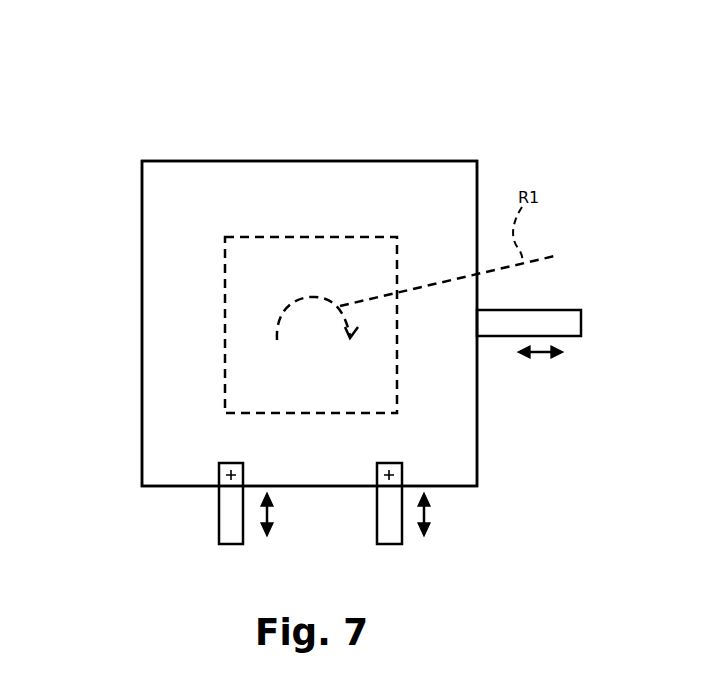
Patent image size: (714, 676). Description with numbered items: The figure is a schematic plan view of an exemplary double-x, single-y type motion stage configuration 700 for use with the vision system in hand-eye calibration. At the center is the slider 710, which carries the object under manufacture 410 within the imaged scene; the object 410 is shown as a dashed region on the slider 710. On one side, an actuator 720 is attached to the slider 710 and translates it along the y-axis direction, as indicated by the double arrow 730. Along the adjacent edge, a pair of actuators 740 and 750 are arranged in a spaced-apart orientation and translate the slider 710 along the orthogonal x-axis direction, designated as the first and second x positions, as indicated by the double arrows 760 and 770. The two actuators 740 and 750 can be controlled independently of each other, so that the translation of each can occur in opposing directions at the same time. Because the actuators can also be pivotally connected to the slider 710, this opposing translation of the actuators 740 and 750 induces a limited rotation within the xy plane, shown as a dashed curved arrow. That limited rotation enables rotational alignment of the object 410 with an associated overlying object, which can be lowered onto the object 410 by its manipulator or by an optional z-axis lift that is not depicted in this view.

The motion stage configuration 700 is at (529, 138).
The slider 710 is at (270, 170).
The object under manufacture 410 is at (243, 278).
The actuator 720 is at (567, 318).
The double arrow 730 is at (540, 355).
The actuator 740 is at (222, 528).
The actuator 750 is at (398, 528).
The double arrow 760 is at (269, 512).
The double arrow 770 is at (426, 512).